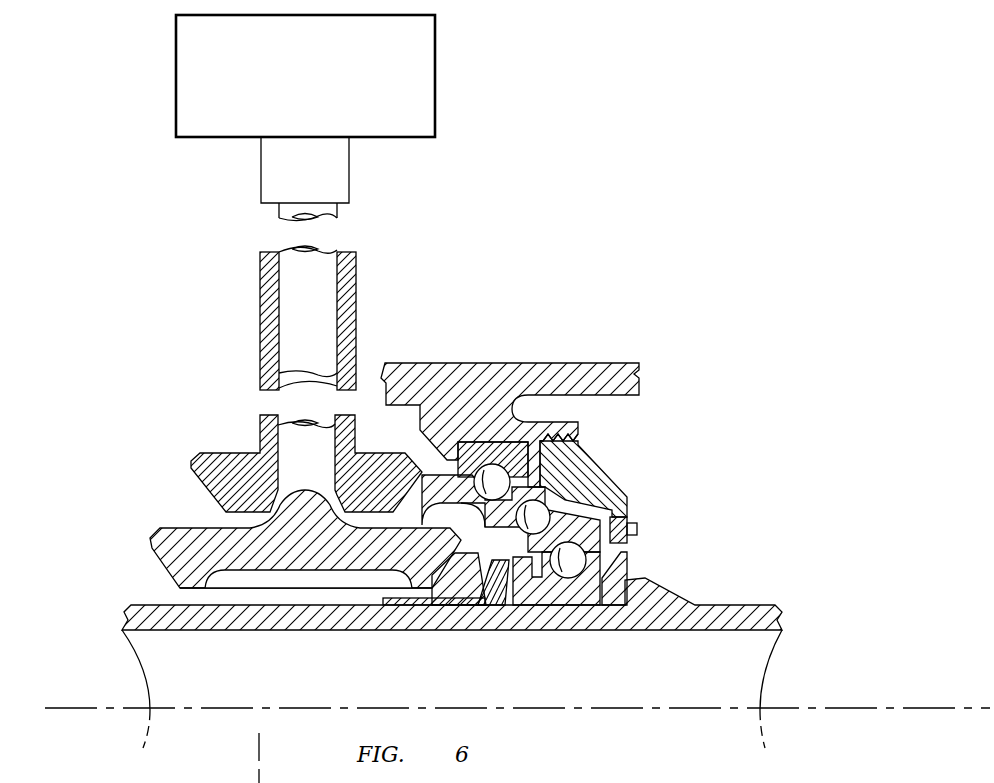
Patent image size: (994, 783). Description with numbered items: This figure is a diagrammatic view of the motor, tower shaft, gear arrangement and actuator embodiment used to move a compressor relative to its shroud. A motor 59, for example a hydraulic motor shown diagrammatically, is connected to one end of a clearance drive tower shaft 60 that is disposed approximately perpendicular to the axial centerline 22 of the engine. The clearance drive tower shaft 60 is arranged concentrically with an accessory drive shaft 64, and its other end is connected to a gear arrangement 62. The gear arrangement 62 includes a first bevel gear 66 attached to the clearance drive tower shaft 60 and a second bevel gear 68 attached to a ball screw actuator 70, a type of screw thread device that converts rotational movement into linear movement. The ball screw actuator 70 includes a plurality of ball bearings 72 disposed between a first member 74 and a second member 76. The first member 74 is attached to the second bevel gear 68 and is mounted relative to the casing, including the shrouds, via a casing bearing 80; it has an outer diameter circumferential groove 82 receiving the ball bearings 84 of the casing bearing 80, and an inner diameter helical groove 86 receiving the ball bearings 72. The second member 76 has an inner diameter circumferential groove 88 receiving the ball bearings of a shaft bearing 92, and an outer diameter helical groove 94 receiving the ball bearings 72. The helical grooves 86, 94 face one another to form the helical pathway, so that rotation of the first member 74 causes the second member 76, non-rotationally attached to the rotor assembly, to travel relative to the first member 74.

The axial centerline 22 is at (72, 707).
The motor 59 is at (427, 83).
The clearance drive tower shaft 60 is at (262, 266).
The gear arrangement 62 is at (146, 535).
The accessory drive shaft 64 is at (338, 252).
The first bevel gear 66 is at (178, 584).
The second bevel gear 68 is at (420, 478).
The ball screw actuator 70 is at (649, 462).
The ball bearings 72 is at (556, 504).
The first member 74 is at (546, 508).
The second member 76 is at (627, 541).
The casing bearing 80 is at (485, 466).
The outer diameter circumferential groove 82 is at (480, 462).
The ball bearings of the casing bearing 84 is at (497, 441).
The inner diameter helical groove 86 is at (513, 557).
The inner diameter circumferential groove 88 is at (557, 578).
The shaft bearing 92 is at (640, 579).
The outer diameter helical groove 94 is at (627, 516).